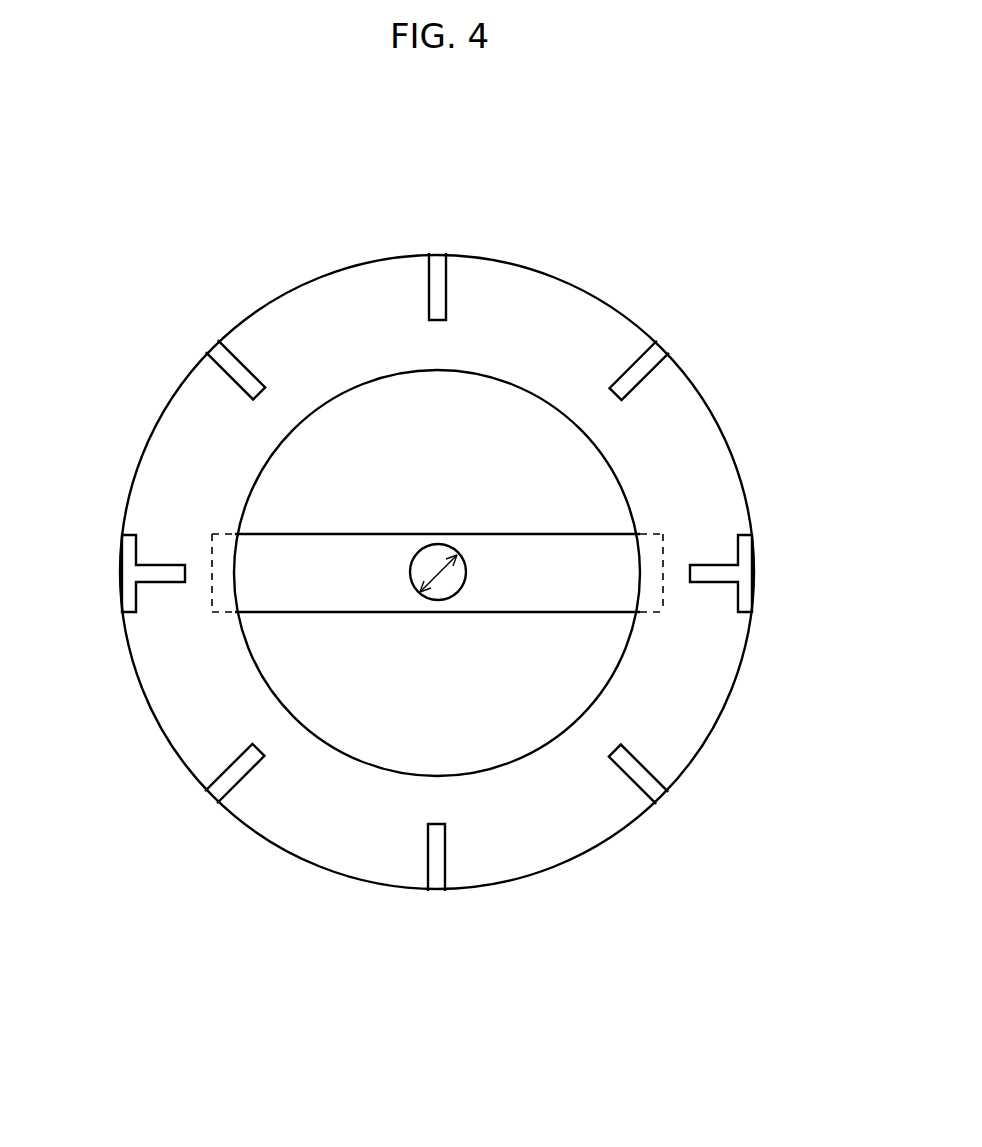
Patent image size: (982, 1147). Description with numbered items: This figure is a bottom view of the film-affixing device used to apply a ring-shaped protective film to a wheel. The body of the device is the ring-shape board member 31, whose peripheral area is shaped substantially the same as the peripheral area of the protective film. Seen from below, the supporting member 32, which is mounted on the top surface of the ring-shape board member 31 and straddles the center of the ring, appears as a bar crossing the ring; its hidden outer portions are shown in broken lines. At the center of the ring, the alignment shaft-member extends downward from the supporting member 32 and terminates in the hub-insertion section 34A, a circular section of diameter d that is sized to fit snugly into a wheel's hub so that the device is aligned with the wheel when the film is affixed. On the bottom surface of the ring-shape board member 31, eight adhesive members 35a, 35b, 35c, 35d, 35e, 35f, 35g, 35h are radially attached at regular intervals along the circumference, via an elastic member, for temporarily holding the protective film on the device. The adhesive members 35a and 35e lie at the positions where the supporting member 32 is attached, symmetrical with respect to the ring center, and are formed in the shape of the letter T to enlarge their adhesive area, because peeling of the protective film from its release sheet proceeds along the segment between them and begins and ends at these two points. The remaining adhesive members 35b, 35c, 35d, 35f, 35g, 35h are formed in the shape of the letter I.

The ring-shape board member 31 is at (325, 307).
The supporting member 32 is at (575, 548).
The hub-insertion section 34A is at (447, 578).
The adhesive member 35a is at (128, 575).
The adhesive member 35b is at (220, 353).
The adhesive member 35c is at (438, 268).
The adhesive member 35d is at (657, 353).
The adhesive member 35e is at (747, 573).
The adhesive member 35f is at (653, 790).
The adhesive member 35g is at (437, 878).
The adhesive member 35h is at (213, 795).